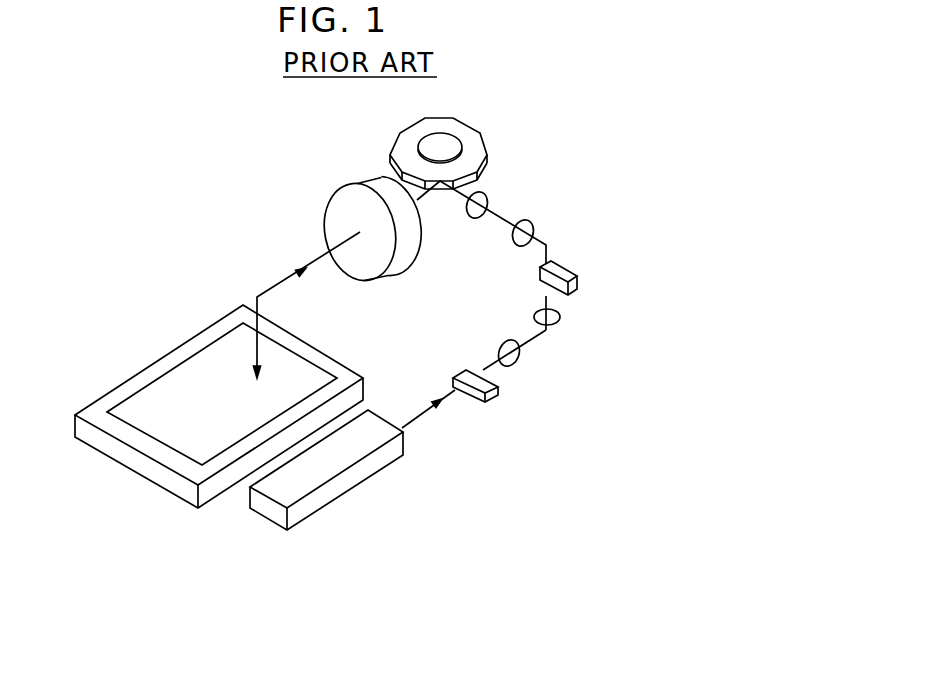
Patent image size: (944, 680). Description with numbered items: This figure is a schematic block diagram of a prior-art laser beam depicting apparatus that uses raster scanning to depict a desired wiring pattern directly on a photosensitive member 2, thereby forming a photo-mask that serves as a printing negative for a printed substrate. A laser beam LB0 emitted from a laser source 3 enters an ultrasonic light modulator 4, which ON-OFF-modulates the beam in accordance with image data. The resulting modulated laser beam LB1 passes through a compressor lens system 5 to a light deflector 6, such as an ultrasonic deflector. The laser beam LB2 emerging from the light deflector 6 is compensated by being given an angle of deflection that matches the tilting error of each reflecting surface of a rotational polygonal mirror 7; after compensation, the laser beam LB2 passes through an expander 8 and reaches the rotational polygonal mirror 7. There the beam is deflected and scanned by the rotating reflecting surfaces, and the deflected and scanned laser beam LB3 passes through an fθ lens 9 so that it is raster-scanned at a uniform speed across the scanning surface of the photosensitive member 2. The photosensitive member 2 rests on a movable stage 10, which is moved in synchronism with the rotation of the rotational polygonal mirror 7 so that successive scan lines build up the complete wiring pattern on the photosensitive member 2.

The photosensitive member 2 is at (185, 452).
The laser source 3 is at (352, 485).
The ultrasonic light modulator 4 is at (495, 395).
The compressor lens system 5 is at (577, 327).
The light deflector 6 is at (577, 271).
The rotational polygonal mirror 7 is at (475, 145).
The expander 8 is at (533, 258).
The fθ lens 9 is at (333, 203).
The movable stage 10 is at (107, 452).
The laser beam LB0 is at (417, 412).
The modulated laser beam LB1 is at (492, 368).
The compensated laser beam LB2 is at (545, 238).
The deflected and scanned laser beam LB3 is at (280, 282).